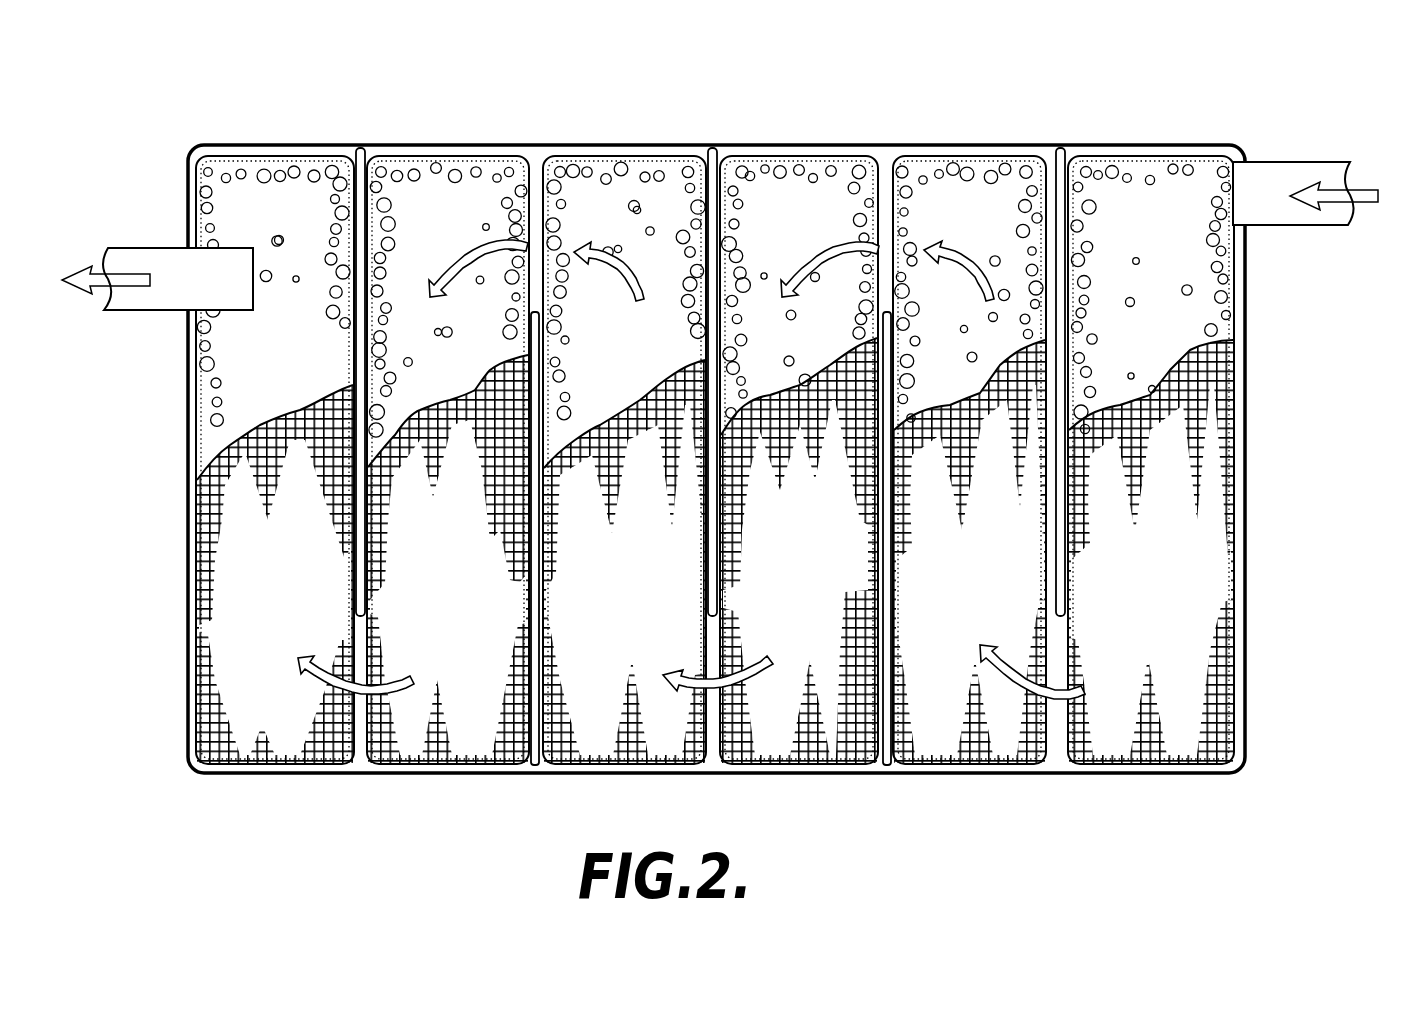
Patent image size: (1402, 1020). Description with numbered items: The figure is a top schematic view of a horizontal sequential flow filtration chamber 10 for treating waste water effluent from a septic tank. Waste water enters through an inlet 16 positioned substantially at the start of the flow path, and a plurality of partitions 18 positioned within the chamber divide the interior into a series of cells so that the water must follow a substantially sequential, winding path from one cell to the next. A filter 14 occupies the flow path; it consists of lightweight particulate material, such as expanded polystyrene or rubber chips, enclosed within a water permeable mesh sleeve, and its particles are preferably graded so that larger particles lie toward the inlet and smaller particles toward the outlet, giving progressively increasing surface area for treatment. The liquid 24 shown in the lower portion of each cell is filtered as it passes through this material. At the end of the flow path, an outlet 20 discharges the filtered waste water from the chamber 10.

The sequential flow filtration chamber 10 is at (1005, 72).
The filter 14 is at (268, 160).
The gas inlet 16 is at (1300, 163).
The partition 18 is at (362, 160).
The outlet 20 is at (148, 250).
The scrubbing liquid 24 is at (270, 735).